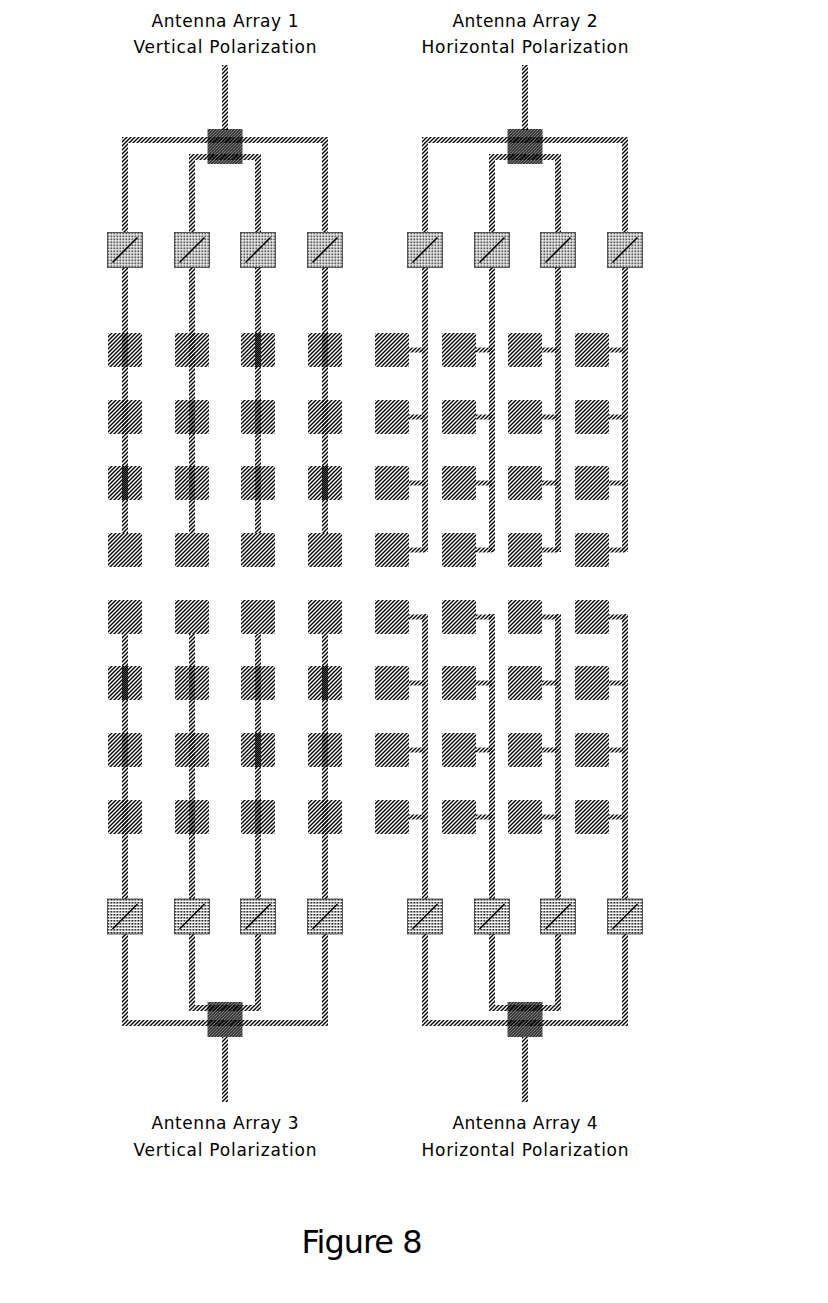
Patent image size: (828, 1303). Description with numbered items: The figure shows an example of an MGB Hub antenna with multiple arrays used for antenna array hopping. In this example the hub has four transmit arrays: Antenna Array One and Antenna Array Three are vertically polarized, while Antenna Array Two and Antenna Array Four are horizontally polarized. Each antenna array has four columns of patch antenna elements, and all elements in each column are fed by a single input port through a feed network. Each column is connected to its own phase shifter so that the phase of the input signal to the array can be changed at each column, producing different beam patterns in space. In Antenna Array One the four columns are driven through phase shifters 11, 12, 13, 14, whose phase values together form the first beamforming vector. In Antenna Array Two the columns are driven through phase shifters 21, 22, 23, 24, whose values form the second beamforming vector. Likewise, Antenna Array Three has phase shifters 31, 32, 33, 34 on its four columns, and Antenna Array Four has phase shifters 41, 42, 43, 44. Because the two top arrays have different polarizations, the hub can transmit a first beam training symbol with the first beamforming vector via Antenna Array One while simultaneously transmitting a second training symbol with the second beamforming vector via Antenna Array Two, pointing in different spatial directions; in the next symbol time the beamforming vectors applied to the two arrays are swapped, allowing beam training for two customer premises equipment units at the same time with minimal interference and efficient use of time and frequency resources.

The phase shifter 11 is at (119, 237).
The phase shifter 12 is at (186, 237).
The phase shifter 13 is at (252, 237).
The phase shifter 14 is at (319, 237).
The phase shifter 21 is at (419, 237).
The phase shifter 22 is at (486, 237).
The phase shifter 23 is at (552, 237).
The phase shifter 24 is at (619, 237).
The phase shifter 31 is at (119, 932).
The phase shifter 32 is at (186, 932).
The phase shifter 33 is at (252, 932).
The phase shifter 34 is at (319, 932).
The phase shifter 41 is at (419, 932).
The phase shifter 42 is at (486, 932).
The phase shifter 43 is at (552, 932).
The phase shifter 44 is at (619, 932).